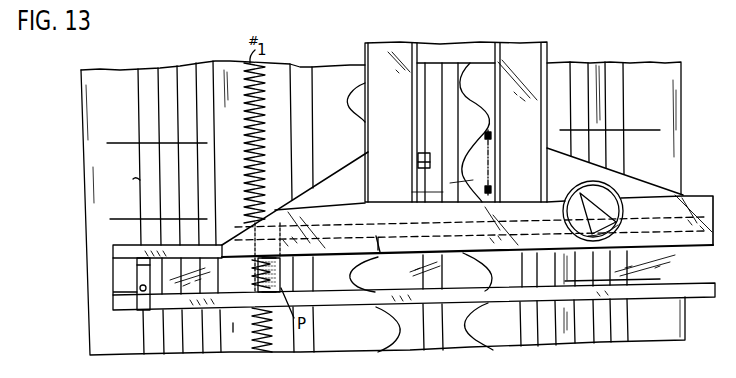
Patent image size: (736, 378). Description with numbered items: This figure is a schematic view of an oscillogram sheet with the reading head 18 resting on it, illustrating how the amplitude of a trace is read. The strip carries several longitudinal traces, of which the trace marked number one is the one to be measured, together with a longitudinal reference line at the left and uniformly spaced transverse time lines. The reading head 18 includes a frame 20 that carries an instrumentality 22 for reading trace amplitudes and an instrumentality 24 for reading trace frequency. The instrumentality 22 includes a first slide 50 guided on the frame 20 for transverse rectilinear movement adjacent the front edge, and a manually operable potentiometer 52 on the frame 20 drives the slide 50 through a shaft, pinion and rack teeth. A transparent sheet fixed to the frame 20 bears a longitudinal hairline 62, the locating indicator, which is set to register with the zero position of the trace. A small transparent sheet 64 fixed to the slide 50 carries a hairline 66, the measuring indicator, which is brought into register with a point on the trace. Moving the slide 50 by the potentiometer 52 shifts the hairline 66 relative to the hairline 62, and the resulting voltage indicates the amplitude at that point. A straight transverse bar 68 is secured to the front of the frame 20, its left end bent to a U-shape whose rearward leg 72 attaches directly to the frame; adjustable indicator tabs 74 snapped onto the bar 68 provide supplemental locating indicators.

The reading head 18 is at (547, 53).
The frame 20 is at (692, 194).
The instrumentality for reading amplitudes 22 is at (173, 328).
The instrumentality for reading frequency 24 is at (501, 148).
The first slide 50 is at (378, 240).
The manually operable potentiometer 52 is at (613, 183).
The hairline 62 is at (233, 287).
The small transparent sheet 64 is at (280, 262).
The hairline 66 is at (268, 277).
The transverse bar 68 is at (698, 294).
The rearward leg 72 is at (118, 253).
The indicator tab 74 is at (143, 307).